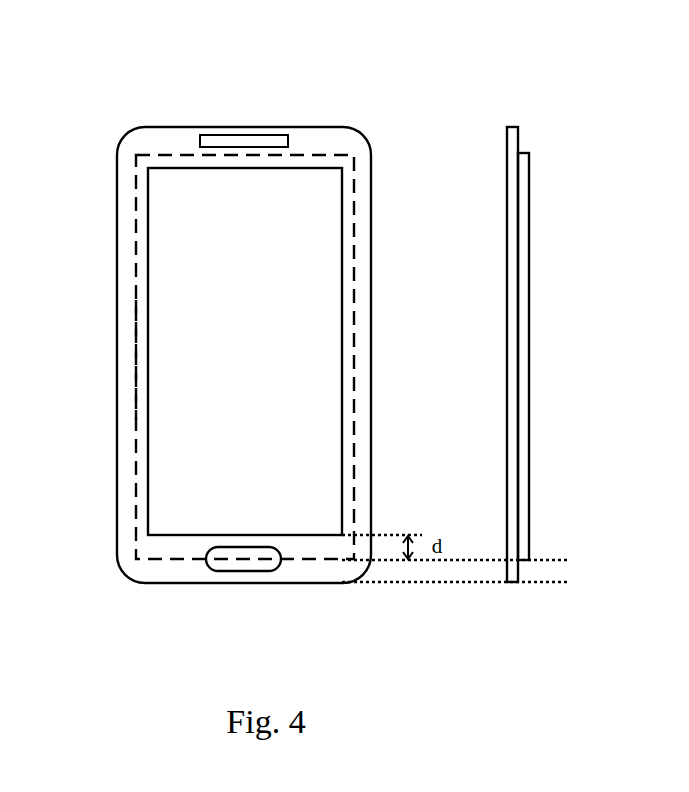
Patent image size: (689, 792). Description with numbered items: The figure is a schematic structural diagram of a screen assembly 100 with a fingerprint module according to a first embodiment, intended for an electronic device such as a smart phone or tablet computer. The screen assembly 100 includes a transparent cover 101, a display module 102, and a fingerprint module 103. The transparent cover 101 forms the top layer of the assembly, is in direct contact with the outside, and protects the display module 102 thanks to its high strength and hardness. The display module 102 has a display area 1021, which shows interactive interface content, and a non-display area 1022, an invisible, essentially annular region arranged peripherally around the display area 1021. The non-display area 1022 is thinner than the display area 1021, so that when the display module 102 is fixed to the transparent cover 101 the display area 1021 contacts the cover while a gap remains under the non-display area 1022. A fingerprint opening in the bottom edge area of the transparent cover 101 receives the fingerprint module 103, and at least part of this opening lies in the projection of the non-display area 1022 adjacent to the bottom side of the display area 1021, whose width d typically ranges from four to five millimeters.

The screen assembly 100 is at (153, 127).
The transparent cover 101 is at (444, 314).
The display module 102 is at (275, 415).
The display area 1021 is at (153, 378).
The non-display area 1022 is at (138, 340).
The fingerprint module 103 is at (268, 571).